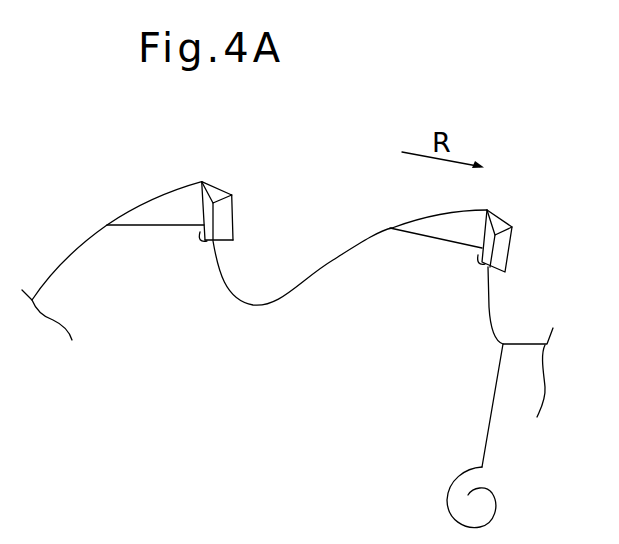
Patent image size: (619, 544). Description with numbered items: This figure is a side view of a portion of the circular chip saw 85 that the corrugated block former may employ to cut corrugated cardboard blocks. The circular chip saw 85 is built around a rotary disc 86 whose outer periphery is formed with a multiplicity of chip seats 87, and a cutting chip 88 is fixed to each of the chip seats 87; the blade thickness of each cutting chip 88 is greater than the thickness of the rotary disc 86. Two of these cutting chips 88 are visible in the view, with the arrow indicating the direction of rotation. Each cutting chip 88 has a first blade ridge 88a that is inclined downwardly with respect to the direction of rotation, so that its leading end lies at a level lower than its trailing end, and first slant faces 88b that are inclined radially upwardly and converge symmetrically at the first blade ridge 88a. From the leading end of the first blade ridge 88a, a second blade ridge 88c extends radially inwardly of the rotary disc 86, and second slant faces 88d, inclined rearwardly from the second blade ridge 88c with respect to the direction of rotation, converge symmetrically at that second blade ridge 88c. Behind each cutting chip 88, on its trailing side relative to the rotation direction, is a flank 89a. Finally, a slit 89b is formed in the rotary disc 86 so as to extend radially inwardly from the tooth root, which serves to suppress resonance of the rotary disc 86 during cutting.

The circular chip saw 85 is at (169, 170).
The rotary disc 86 is at (477, 315).
The chip seat 87 is at (203, 240).
The cutting chip 88 is at (243, 188).
The first blade ridge 88a is at (213, 187).
The first slant faces 88b is at (230, 195).
The second blade ridge 88c is at (233, 208).
The second slant faces 88d is at (223, 225).
The flank 89a is at (157, 207).
The slit 89b is at (493, 387).